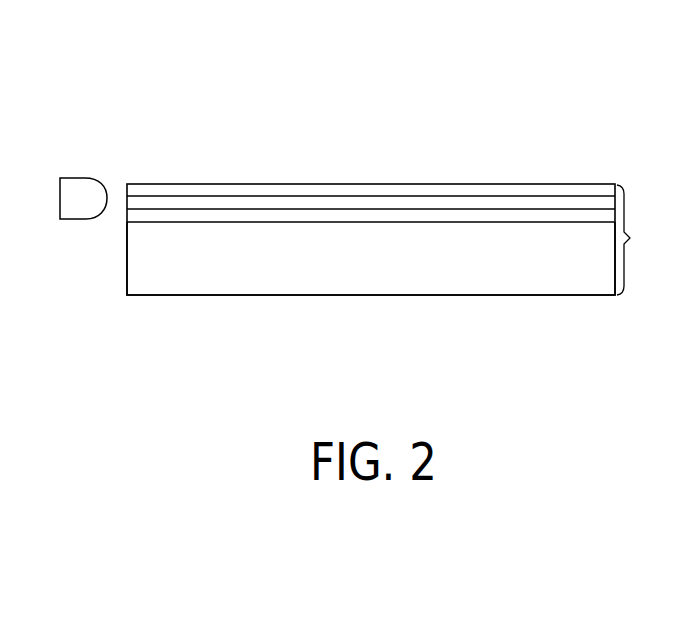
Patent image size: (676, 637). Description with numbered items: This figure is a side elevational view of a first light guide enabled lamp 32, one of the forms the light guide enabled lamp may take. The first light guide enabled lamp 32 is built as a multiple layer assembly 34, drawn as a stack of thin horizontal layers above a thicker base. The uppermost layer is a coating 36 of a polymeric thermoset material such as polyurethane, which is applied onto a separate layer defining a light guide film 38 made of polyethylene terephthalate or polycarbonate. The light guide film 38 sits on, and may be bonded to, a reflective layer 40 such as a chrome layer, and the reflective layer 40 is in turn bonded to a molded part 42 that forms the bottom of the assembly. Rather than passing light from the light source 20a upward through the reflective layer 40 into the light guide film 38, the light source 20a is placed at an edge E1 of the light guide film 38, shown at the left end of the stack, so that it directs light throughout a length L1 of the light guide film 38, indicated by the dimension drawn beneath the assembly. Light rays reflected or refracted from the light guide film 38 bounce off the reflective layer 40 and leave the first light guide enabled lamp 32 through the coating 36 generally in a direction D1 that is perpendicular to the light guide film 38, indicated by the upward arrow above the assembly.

The light source 20a is at (78, 192).
The first light guide enabled lamp 32 is at (503, 158).
The multiple layer assembly 34 is at (640, 240).
The coating 36 is at (223, 192).
The light guide film 38 is at (545, 205).
The reflective layer 40 is at (267, 215).
The molded part 42 is at (485, 275).
The direction D1 is at (371, 58).
The edge E1 is at (127, 253).
The length L1 is at (127, 302).